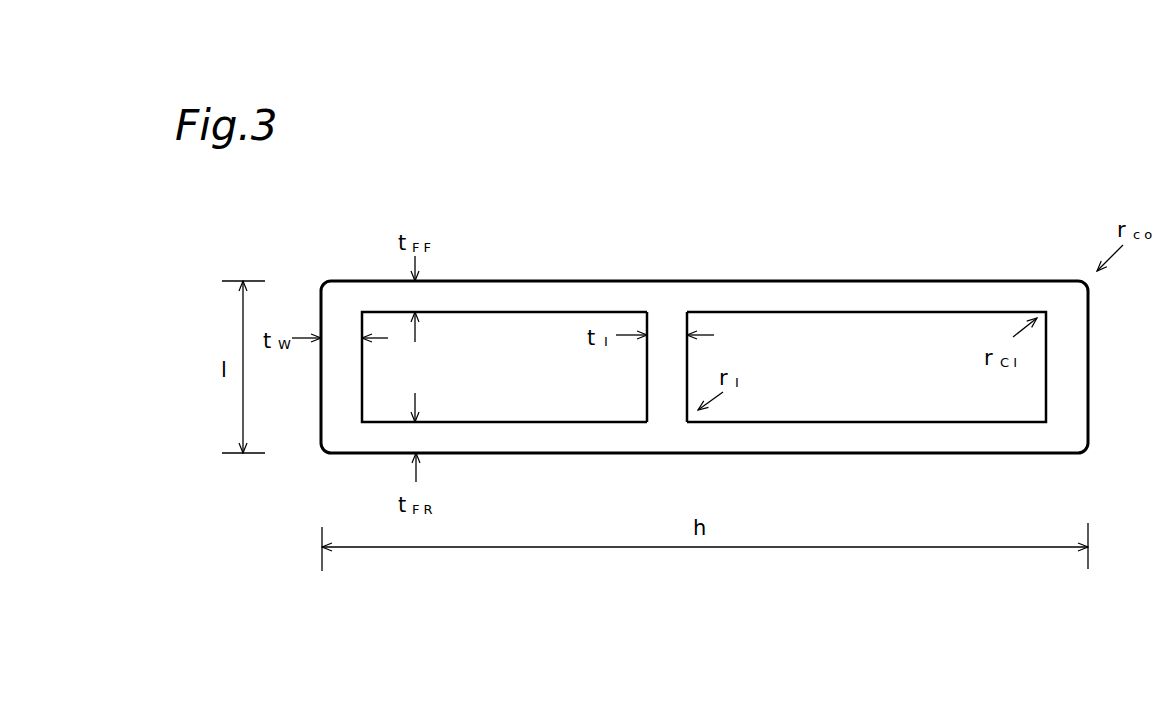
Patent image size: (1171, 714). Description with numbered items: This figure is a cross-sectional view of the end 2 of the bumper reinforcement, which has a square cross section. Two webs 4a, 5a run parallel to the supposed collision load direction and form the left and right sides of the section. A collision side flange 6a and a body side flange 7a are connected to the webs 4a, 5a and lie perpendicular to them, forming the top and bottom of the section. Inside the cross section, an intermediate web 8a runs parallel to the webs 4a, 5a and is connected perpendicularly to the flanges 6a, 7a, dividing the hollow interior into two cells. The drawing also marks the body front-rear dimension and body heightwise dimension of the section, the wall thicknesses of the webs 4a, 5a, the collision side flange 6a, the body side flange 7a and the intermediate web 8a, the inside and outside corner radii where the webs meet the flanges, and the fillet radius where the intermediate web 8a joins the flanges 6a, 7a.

The end 2 is at (833, 222).
The web 4a is at (330, 378).
The web 5a is at (1075, 364).
The collision side flange 6a is at (909, 290).
The body side flange 7a is at (788, 440).
The intermediate web 8a is at (655, 376).